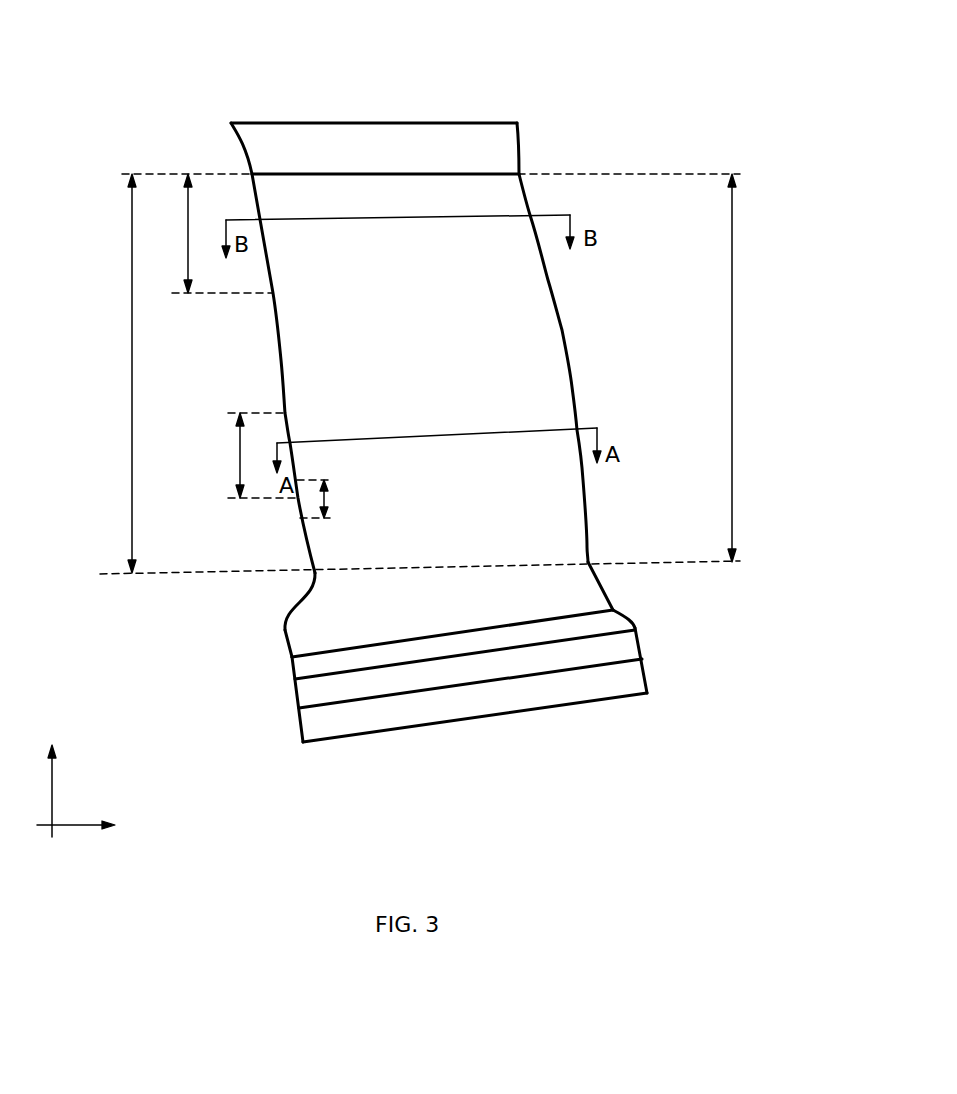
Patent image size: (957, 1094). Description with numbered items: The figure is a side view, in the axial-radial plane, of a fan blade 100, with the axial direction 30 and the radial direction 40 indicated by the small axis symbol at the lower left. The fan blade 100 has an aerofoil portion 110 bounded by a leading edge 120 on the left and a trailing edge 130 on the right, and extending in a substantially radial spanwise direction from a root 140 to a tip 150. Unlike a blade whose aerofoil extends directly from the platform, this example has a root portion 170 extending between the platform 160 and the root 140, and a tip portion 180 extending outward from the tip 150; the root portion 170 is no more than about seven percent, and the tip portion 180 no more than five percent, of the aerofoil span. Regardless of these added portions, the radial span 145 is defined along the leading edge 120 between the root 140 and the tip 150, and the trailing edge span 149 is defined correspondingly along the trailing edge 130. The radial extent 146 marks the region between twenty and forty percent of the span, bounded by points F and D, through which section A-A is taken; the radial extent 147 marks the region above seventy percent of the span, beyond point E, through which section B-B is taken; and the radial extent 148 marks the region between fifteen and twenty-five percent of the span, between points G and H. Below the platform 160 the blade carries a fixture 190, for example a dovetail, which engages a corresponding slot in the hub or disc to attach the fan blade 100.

The fan blade 100 is at (512, 95).
The aerofoil portion 110 is at (552, 330).
The leading edge 120 is at (281, 360).
The trailing edge 130 is at (573, 388).
The root 140 is at (305, 585).
The radial span 145 is at (132, 418).
The radial extent 146 is at (240, 447).
The radial extent 147 is at (206, 233).
The radial extent 148 is at (330, 498).
The trailing edge span 149 is at (732, 412).
The tip 150 is at (247, 160).
The platform 160 is at (520, 622).
The root portion 170 is at (292, 637).
The tip portion 180 is at (403, 133).
The fixture 190 is at (632, 648).
The axial direction 30 is at (111, 827).
The radial direction 40 is at (49, 767).